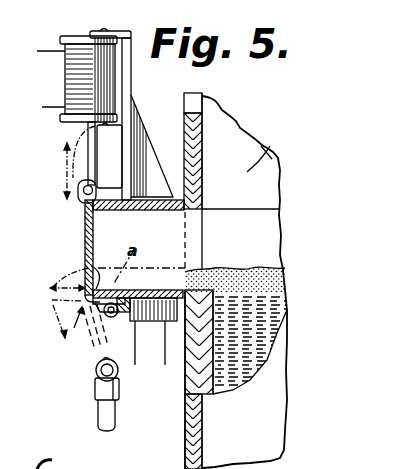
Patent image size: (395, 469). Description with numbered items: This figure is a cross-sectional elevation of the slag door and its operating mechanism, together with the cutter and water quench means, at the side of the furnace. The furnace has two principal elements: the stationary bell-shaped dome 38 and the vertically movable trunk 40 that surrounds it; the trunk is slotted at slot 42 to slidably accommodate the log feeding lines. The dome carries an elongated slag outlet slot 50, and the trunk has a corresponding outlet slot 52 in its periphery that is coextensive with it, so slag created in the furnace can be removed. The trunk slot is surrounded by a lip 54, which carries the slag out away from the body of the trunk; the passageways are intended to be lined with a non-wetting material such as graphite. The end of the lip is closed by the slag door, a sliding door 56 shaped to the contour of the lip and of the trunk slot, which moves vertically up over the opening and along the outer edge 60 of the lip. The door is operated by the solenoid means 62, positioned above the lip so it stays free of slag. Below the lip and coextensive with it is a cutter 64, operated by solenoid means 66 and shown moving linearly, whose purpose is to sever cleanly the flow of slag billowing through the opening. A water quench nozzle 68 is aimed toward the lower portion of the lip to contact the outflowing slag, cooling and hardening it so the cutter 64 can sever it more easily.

The dome 38 is at (262, 150).
The trunk 40 is at (225, 115).
The slot 42 is at (184, 104).
The slag outlet slot 50 is at (253, 210).
The outlet slot 52 is at (201, 212).
The lip 54 is at (143, 212).
The sliding door 56 is at (85, 247).
The outer edge 60 is at (88, 272).
The solenoid means 62 is at (70, 80).
The cutter 64 is at (106, 308).
The solenoid means 66 is at (152, 322).
The water quench nozzle 68 is at (96, 371).